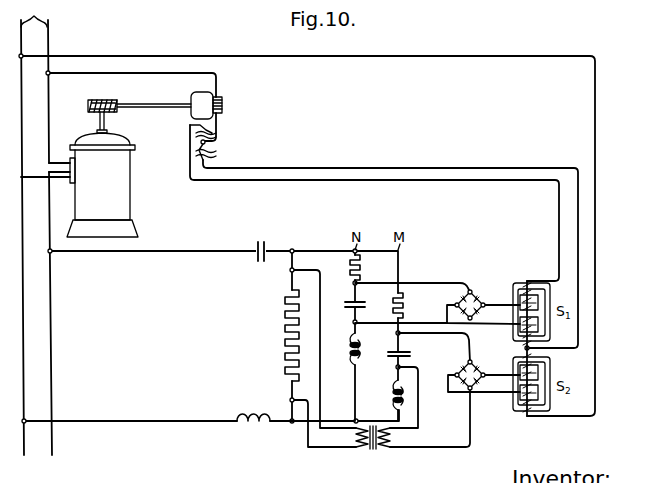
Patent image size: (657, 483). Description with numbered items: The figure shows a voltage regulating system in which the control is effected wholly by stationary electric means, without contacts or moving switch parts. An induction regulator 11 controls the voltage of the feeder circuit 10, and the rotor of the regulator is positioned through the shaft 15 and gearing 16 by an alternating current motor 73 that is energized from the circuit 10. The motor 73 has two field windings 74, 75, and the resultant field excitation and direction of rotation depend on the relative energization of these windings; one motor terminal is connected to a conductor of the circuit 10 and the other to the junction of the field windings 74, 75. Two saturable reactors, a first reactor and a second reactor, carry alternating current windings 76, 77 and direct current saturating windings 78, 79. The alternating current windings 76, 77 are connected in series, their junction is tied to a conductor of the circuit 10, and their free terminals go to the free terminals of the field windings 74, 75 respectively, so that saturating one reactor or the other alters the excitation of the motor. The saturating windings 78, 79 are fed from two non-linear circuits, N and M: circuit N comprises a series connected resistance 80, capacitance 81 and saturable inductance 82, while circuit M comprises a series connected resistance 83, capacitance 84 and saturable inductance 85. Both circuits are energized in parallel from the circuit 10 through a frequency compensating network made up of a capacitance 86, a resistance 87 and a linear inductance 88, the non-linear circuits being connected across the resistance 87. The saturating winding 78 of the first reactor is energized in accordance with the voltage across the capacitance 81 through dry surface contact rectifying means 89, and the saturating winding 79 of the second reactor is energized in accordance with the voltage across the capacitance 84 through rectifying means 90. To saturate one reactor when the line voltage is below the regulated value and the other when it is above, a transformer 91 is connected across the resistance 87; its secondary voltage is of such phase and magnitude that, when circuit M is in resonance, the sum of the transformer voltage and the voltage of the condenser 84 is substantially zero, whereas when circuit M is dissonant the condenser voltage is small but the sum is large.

The feeder circuit 10 is at (36, 228).
The induction regulator 11 is at (131, 182).
The shaft 15 is at (152, 103).
The gearing 16 is at (98, 100).
The alternating current motor 73 is at (206, 109).
The field winding 74 is at (216, 135).
The field winding 75 is at (216, 154).
The alternating current winding 76 is at (525, 283).
The alternating current winding 77 is at (525, 358).
The direct current saturating winding 78 is at (520, 317).
The direct current saturating winding 79 is at (520, 384).
The resistance 80 is at (361, 268).
The capacitance 81 is at (363, 301).
The saturable inductance 82 is at (361, 348).
The resistance 83 is at (404, 305).
The capacitance 84 is at (408, 355).
The saturable inductance 85 is at (405, 390).
The capacitance 86 is at (266, 251).
The resistance 87 is at (285, 326).
The linear inductance 88 is at (250, 414).
The rectifying means 89 is at (470, 290).
The rectifying means 90 is at (469, 390).
The transformer 91 is at (373, 450).